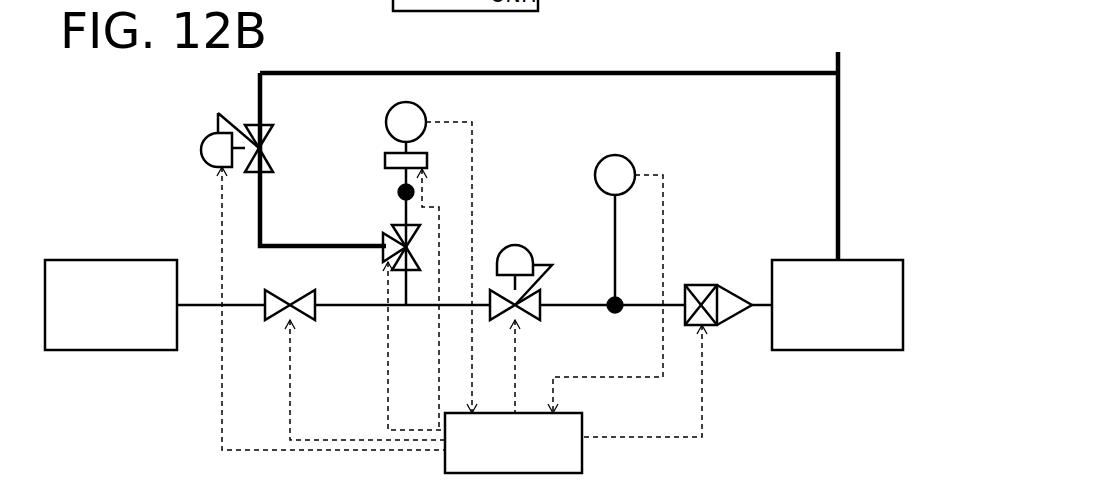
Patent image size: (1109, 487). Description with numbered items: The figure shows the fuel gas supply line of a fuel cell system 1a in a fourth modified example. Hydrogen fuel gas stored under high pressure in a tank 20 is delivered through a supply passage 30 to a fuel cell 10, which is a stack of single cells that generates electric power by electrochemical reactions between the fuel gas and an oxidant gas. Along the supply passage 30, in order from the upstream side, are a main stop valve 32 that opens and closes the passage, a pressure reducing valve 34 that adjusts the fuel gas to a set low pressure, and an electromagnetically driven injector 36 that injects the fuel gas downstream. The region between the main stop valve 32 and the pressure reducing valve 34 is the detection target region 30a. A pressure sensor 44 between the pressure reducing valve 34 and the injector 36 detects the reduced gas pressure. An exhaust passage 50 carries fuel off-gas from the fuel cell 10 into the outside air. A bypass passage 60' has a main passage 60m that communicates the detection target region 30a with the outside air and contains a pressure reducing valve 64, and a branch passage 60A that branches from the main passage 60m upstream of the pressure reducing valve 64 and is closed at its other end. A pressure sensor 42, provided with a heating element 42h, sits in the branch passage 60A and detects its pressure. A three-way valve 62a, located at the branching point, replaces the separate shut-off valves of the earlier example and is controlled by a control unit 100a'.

The fuel cell system 1a is at (885, 53).
The fuel cell 10 is at (866, 258).
The tank 20 is at (100, 258).
The supply passage 30 is at (575, 308).
The detection target region 30a is at (345, 310).
The main stop valve 32 is at (265, 323).
The pressure reducing valve 34 is at (527, 247).
The injector 36 is at (730, 322).
The pressure sensor 42 is at (424, 110).
The heating element 42h is at (386, 153).
The pressure sensor 44 is at (617, 156).
The exhaust passage 50 is at (841, 94).
The bypass passage 60' is at (289, 133).
The main passage 60m is at (263, 183).
The branch passage 60A is at (399, 193).
The three-way valve 62a is at (392, 225).
The pressure reducing valve 64 is at (203, 150).
The control unit 100a' is at (558, 432).